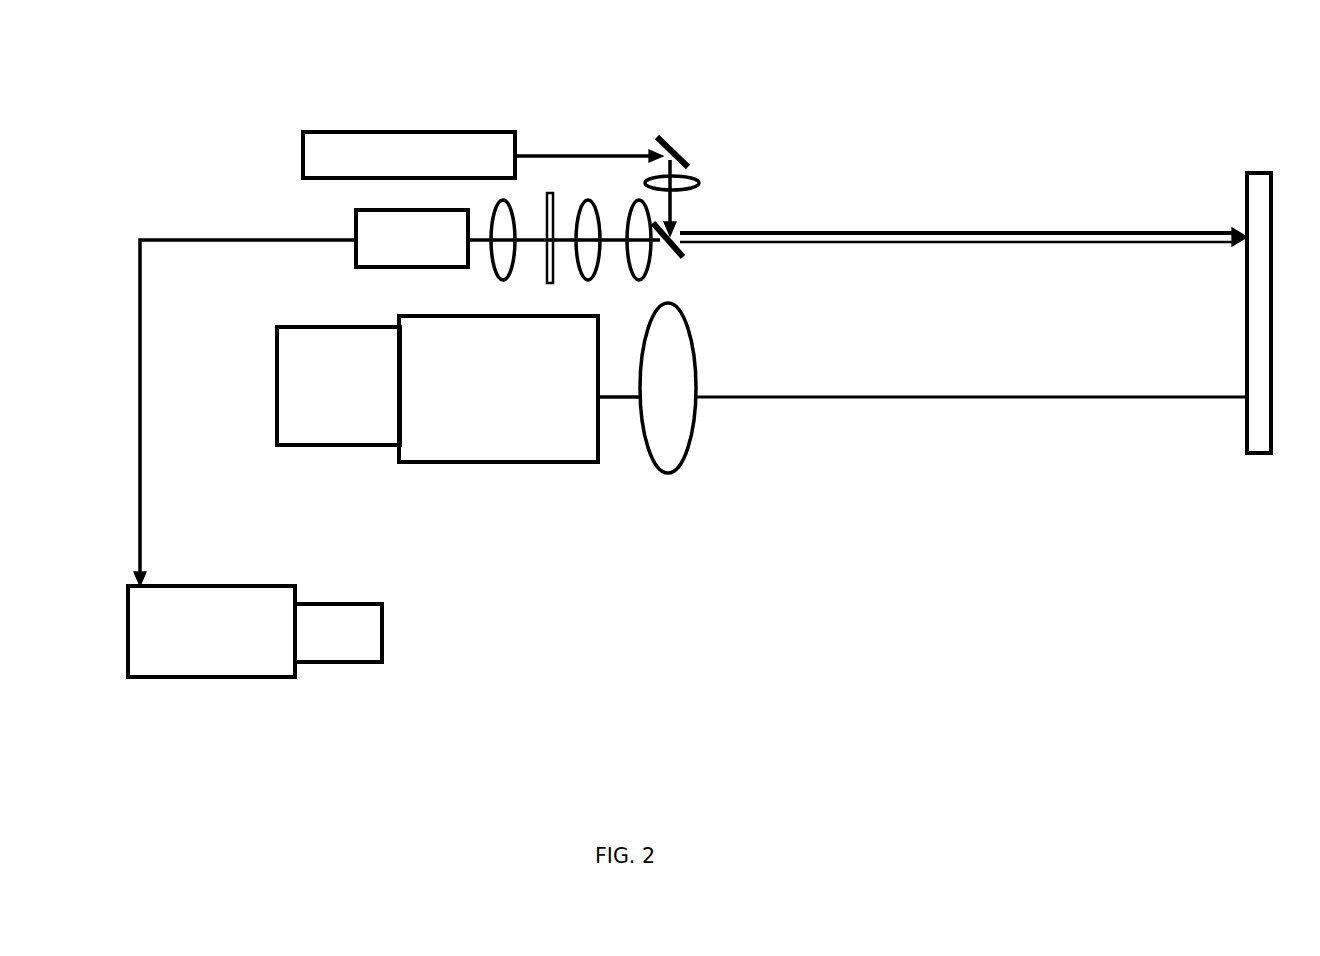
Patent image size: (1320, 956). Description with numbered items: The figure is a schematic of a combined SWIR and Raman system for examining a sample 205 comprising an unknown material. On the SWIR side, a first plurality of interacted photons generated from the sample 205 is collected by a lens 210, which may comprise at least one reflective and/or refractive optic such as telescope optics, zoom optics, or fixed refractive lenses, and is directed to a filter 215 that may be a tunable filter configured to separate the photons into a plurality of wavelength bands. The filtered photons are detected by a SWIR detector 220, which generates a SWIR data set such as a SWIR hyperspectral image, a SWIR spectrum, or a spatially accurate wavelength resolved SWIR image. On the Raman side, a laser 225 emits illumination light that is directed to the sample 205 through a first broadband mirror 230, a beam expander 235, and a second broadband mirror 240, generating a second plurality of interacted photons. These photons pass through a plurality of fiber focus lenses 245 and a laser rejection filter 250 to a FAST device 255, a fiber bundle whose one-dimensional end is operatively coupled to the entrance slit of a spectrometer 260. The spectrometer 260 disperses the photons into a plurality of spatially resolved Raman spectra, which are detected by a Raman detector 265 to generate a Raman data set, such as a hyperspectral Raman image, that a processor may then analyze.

The sample 205 is at (1263, 350).
The lens 210 is at (943, 437).
The filter 215 is at (520, 441).
The SWIR detector 220 is at (338, 435).
The laser 225 is at (483, 118).
The broadband mirror 230 is at (653, 132).
The beam expander 235 is at (705, 182).
The broadband mirror 240 is at (697, 225).
The fiber focus lenses 245 is at (513, 267).
The laser rejection filter 250 is at (545, 280).
The FAST device 255 is at (312, 232).
The spectrometer 260 is at (208, 674).
The Raman detector 265 is at (351, 671).